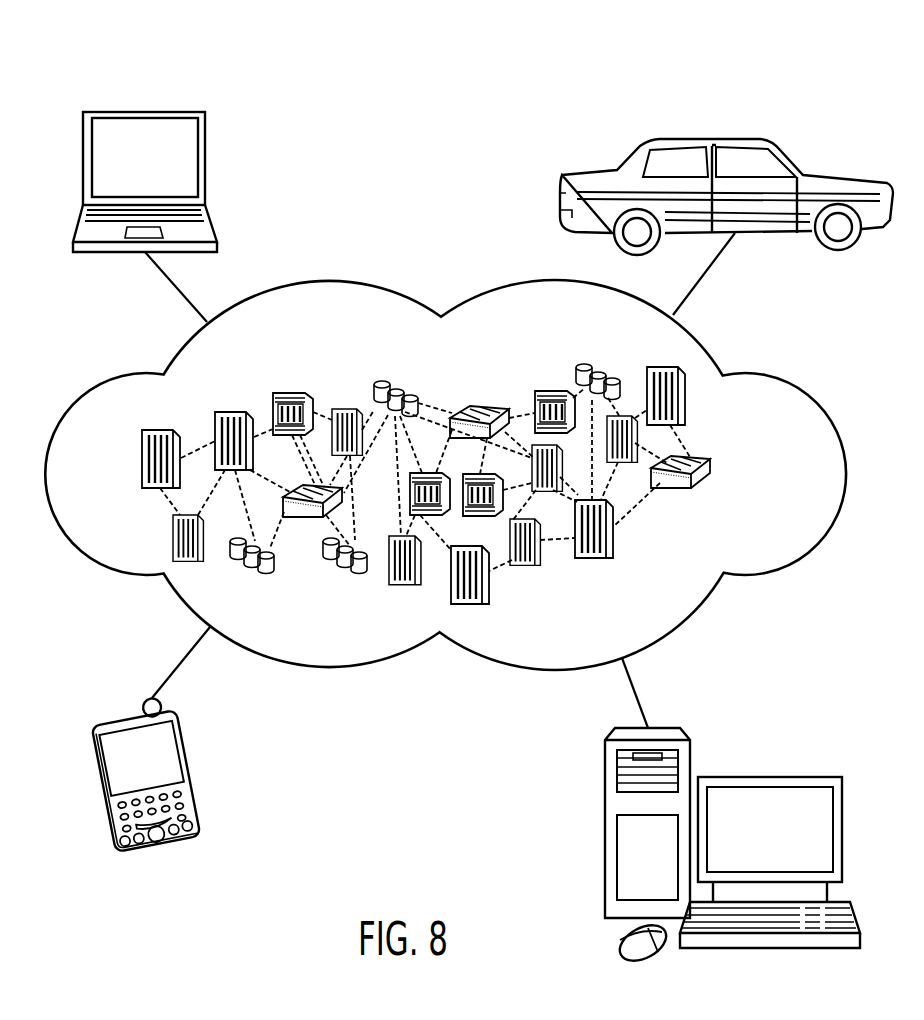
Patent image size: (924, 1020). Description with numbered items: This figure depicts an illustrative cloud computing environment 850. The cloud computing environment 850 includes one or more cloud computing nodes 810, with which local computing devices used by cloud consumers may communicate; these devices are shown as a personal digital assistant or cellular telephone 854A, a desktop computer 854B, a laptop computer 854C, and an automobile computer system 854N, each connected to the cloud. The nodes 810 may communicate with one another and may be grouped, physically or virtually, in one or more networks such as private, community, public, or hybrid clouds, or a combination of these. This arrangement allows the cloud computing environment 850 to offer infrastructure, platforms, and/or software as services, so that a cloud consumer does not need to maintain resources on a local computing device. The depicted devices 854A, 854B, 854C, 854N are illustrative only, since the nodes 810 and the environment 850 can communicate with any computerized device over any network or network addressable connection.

The cloud computing environment 850 is at (785, 379).
The cloud computing nodes 810 is at (724, 476).
The personal digital assistant (PDA) or cellular telephone 854A is at (122, 710).
The desktop computer 854B is at (770, 776).
The laptop computer 854C is at (145, 110).
The automobile computer system 854N is at (703, 140).